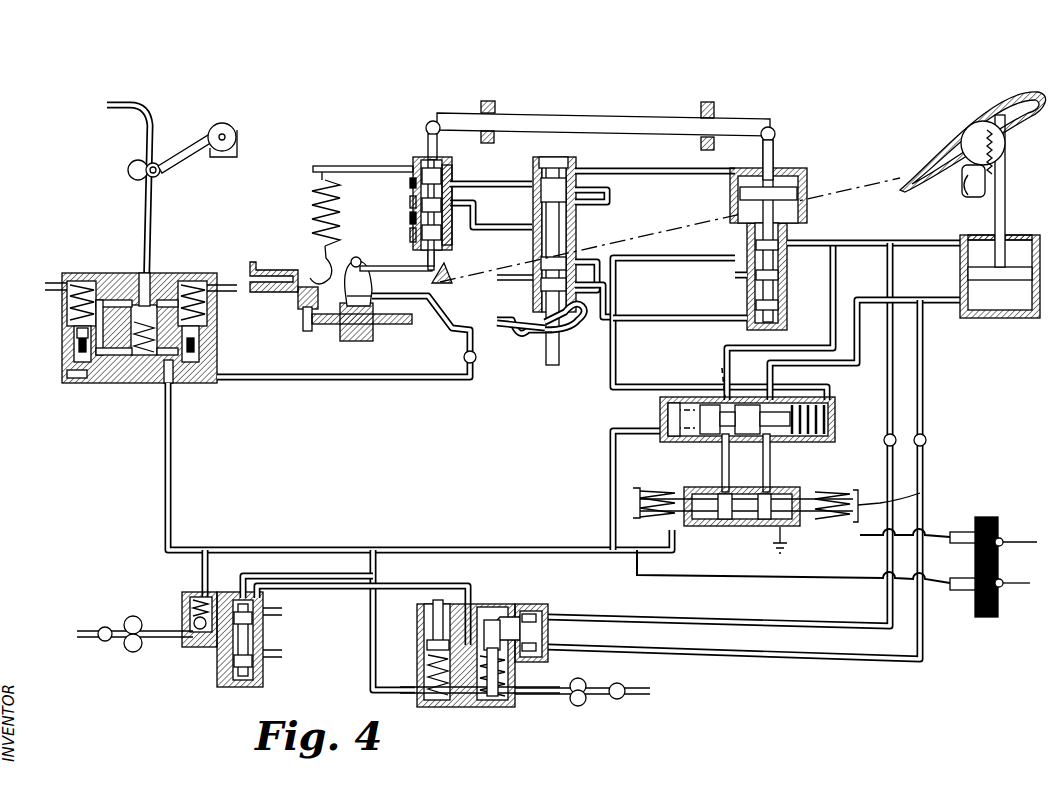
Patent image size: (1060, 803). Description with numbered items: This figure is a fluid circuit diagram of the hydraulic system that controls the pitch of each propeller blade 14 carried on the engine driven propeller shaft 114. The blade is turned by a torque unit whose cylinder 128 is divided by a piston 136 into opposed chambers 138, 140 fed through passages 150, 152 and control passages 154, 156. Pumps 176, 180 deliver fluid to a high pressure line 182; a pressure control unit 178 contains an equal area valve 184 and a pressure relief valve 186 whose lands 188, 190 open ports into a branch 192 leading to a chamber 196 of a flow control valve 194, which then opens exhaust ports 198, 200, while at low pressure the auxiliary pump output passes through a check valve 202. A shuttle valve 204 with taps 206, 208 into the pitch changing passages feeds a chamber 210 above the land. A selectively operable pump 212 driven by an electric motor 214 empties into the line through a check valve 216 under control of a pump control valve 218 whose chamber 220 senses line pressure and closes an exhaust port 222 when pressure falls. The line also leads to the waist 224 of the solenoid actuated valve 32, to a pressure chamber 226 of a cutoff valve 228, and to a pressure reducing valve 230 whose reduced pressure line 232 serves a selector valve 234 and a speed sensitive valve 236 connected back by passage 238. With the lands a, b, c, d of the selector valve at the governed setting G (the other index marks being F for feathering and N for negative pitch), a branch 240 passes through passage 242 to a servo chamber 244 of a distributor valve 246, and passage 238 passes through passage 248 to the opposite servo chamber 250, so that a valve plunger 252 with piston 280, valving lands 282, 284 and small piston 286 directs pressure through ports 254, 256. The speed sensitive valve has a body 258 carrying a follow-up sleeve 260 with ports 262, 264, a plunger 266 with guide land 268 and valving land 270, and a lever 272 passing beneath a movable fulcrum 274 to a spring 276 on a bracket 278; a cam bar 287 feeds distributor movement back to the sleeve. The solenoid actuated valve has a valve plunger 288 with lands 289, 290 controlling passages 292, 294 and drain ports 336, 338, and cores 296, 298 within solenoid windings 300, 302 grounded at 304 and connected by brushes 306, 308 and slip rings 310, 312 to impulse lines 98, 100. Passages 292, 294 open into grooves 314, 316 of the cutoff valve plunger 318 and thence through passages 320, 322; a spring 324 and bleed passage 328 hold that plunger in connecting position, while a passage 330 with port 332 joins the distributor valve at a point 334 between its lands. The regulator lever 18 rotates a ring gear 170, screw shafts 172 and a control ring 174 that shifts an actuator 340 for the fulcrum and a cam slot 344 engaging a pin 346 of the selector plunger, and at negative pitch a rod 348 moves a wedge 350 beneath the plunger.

The blade 14 is at (985, 110).
The lever 18 is at (260, 264).
The solenoid actuated valve 32 is at (736, 606).
The impulse line 98 is at (1020, 585).
The impulse line 100 is at (1013, 541).
The propeller shaft 114 is at (962, 191).
The cylinder 128 is at (985, 318).
The piston 136 is at (1000, 209).
The chamber 138 is at (1010, 252).
The chamber 140 is at (1037, 315).
The passage 150 is at (928, 243).
The passage 152 is at (952, 305).
The control passage 154 is at (857, 243).
The control passage 156 is at (853, 298).
The ring gear 170 is at (297, 300).
The screw shafts 172 is at (318, 327).
The control ring 174 is at (373, 337).
The system pump 176 is at (578, 702).
The pressure control unit 178 is at (465, 707).
The auxiliary pump 180 is at (134, 652).
The high pressure line 182 is at (172, 438).
The equal area valve 184 is at (490, 702).
The pressure relief valve 186 is at (437, 700).
The land 188 is at (490, 616).
The land 190 is at (428, 632).
The branch 192 is at (410, 584).
The flow control valve 194 is at (263, 683).
The chamber 196 is at (243, 594).
The exhaust port 198 is at (287, 605).
The exhaust port 200 is at (287, 647).
The check valve 202 is at (182, 606).
The shuttle valve 204 is at (548, 608).
The actuating passage 206 is at (640, 618).
The actuating passage 208 is at (640, 650).
The chamber 210 is at (510, 613).
The selectively operable pump 212 is at (130, 175).
The electric motor 214 is at (238, 141).
The check valve 216 is at (170, 278).
The pump control valve 218 is at (70, 364).
The chamber 220 is at (76, 380).
The exhaust port 222 is at (60, 333).
The waist 224 is at (755, 527).
The pressure chamber 226 is at (666, 412).
The cutoff valve 228 is at (835, 406).
The pressure reducing valve 230 is at (215, 332).
The reduced pressure line 232 is at (300, 383).
The selector valve 234 is at (560, 250).
The speed sensitive valve 236 is at (403, 162).
The passage 238 is at (491, 181).
The branch 240 is at (532, 284).
The passage 242 is at (655, 317).
The servo chamber 244 is at (788, 323).
The distributor valve 246 is at (807, 185).
The passage 248 is at (668, 173).
The servo chamber 250 is at (802, 163).
The valve plunger 252 is at (752, 199).
The control port 254 is at (790, 240).
The control port 256 is at (785, 272).
The body 258 is at (410, 235).
The follow-up sleeve 260 is at (426, 132).
The port 262 is at (410, 202).
The port 264 is at (410, 183).
The plunger 266 is at (428, 257).
The guide land 268 is at (410, 218).
The valving land 270 is at (454, 193).
The lever 272 is at (370, 266).
The movable fulcrum 274 is at (311, 268).
The spring 276 is at (305, 206).
The bracket 278 is at (338, 166).
The piston 280 is at (748, 144).
The valving land 282 is at (752, 244).
The valving land 284 is at (740, 276).
The small piston 286 is at (742, 312).
The cam bar 287 is at (636, 106).
The valve plunger 288 is at (712, 498).
The land 289 is at (718, 492).
The land 290 is at (760, 497).
The passage 292 is at (722, 450).
The passage 294 is at (770, 481).
The armature 296 is at (665, 514).
The armature 298 is at (836, 490).
The solenoid winding 300 is at (633, 493).
The solenoid winding 302 is at (860, 505).
The ground 304 is at (780, 555).
The brush 306 is at (950, 590).
The brush 308 is at (950, 543).
The slip ring 310 is at (972, 618).
The slip ring 312 is at (978, 515).
The groove 314 is at (729, 442).
The groove 316 is at (768, 445).
The valve plunger 318 is at (668, 430).
The passage 320 is at (727, 346).
The passage 322 is at (770, 366).
The spring 324 is at (836, 412).
The bleed passage 328 is at (708, 372).
The passage 330 is at (546, 360).
The port 332 is at (700, 392).
The point 334 is at (740, 259).
The port 336 is at (700, 527).
The port 338 is at (790, 528).
The actuator 340 is at (372, 305).
The cam slot 344 is at (578, 328).
The pin 346 is at (556, 345).
The rod 348 is at (889, 177).
The wedge 350 is at (538, 272).
The land a is at (569, 161).
The land b is at (541, 194).
The land c is at (541, 262).
The land d is at (541, 283).
The feathering index F is at (519, 351).
The governed pitch index G is at (527, 370).
The negative pitch index N is at (527, 389).